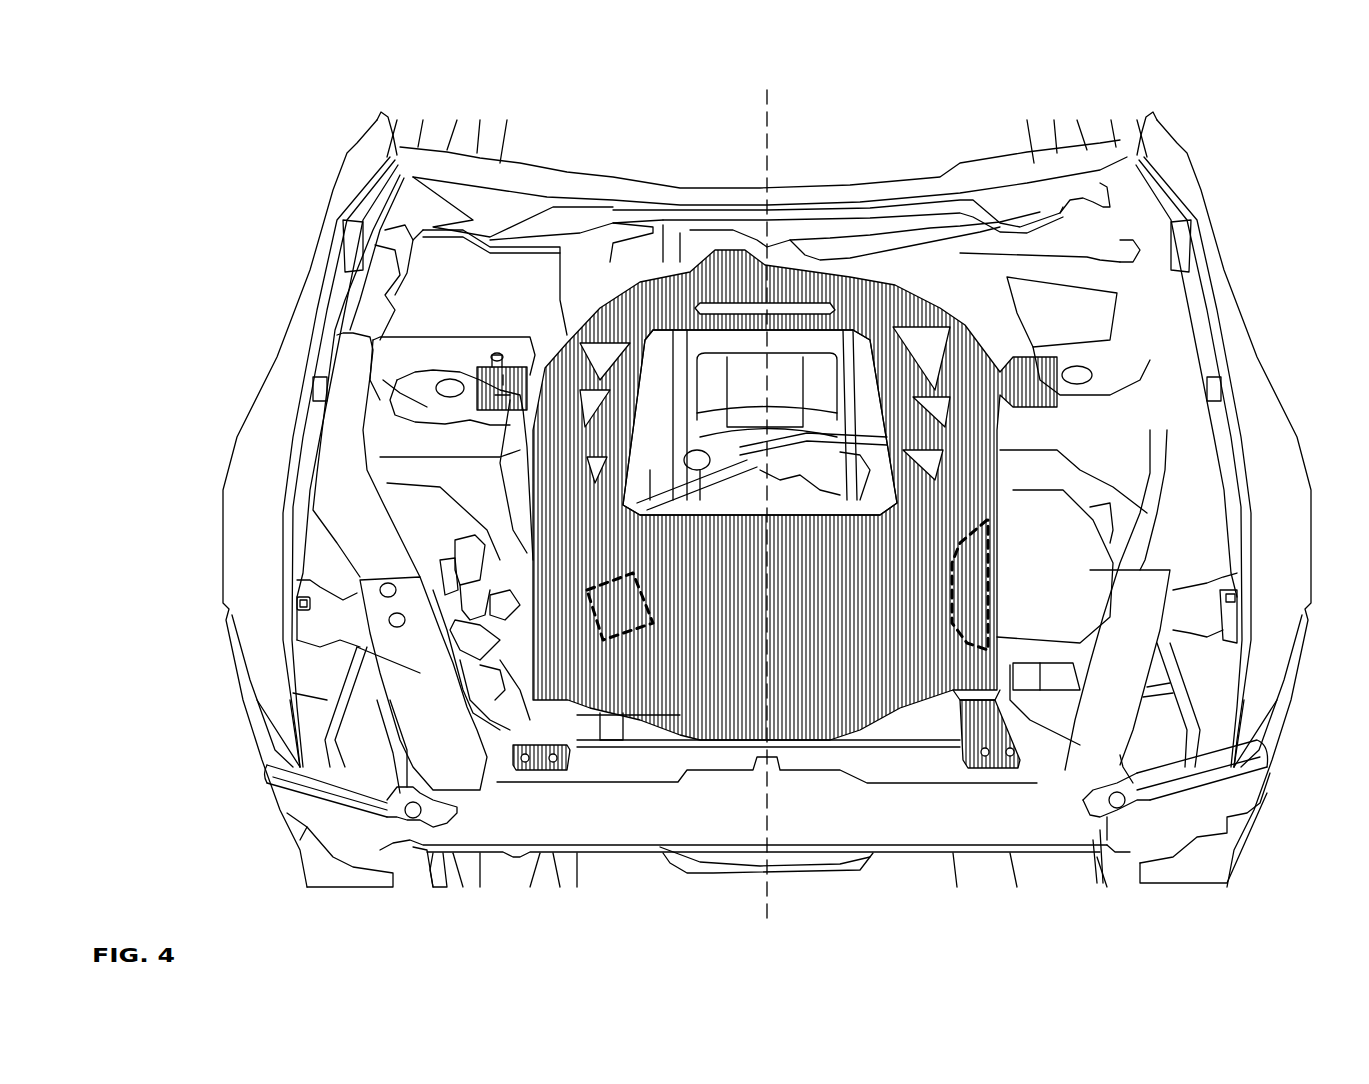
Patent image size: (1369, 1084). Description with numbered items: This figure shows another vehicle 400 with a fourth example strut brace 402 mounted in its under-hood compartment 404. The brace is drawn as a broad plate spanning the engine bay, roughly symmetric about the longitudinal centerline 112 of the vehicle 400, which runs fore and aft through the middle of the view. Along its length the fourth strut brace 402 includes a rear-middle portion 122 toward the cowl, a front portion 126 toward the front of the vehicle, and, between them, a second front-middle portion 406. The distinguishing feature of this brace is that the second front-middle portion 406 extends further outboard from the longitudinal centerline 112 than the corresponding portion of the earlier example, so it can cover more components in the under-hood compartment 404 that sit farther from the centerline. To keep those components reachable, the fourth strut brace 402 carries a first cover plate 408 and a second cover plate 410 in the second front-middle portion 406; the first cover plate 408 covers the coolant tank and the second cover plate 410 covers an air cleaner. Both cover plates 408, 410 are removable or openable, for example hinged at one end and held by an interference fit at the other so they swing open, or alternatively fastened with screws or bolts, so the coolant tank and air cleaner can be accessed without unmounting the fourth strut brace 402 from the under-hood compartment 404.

The vehicle 400 is at (255, 77).
The under-hood compartment 404 is at (396, 292).
The rear-middle portion 122 is at (568, 346).
The fourth strut brace 402 is at (978, 325).
The first cover plate 408 is at (597, 592).
The second front-middle portion 406 is at (955, 521).
The second cover plate 410 is at (997, 577).
The front portion 126 is at (976, 685).
The longitudinal centerline 112 is at (765, 915).